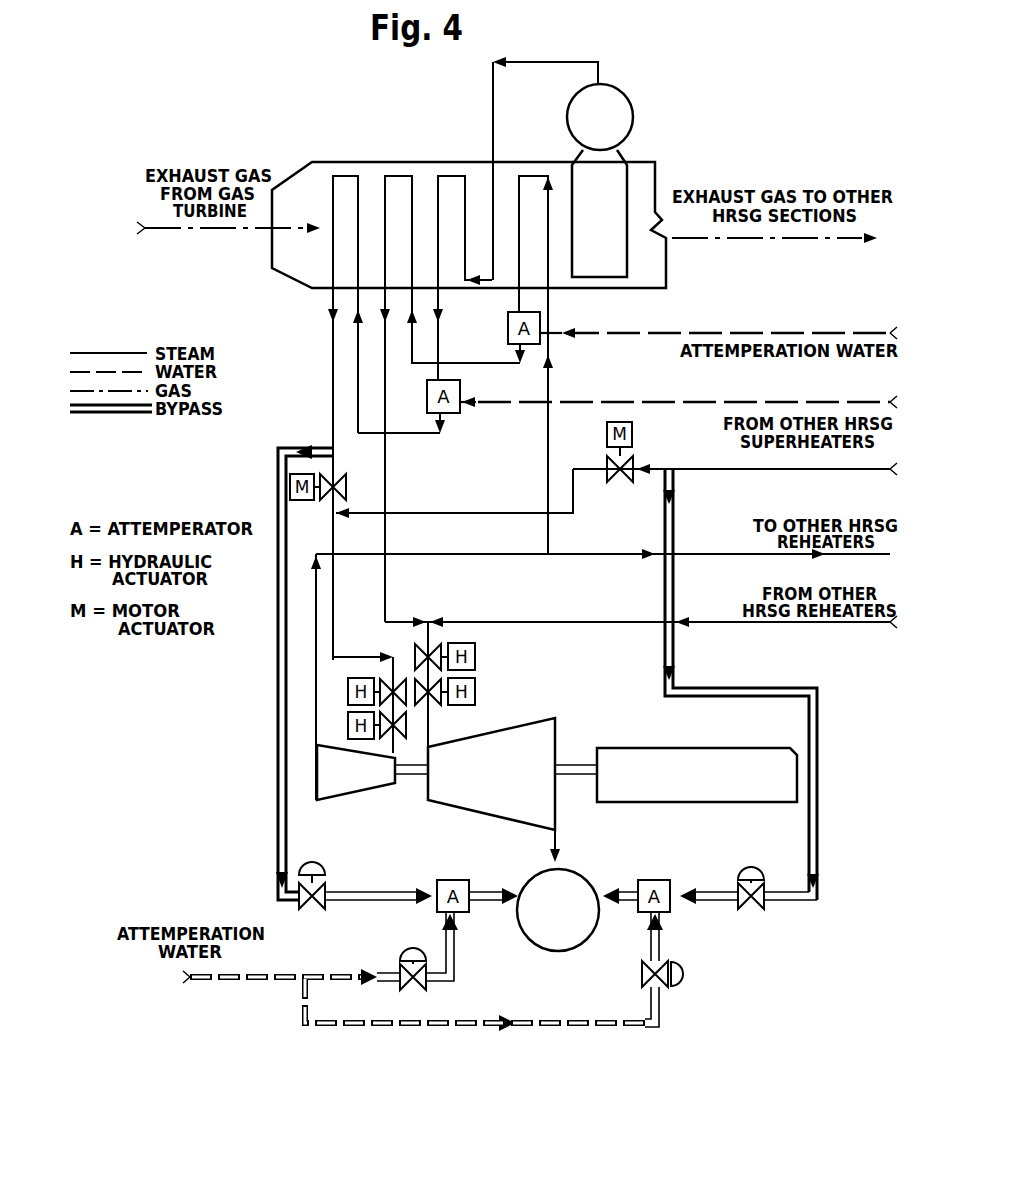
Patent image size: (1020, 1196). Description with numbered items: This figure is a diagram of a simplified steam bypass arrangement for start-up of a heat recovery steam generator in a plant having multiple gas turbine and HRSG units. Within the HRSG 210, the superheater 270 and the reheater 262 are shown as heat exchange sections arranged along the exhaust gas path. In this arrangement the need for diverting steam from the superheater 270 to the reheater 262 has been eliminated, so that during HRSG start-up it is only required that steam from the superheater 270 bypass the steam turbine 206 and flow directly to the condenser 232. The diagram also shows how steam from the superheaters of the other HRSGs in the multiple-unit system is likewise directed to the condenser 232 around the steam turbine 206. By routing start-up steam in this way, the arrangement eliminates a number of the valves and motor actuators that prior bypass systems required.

The HRSG 210 is at (294, 155).
The superheater 270 is at (341, 170).
The reheater 262 is at (397, 170).
The steam turbine 206 is at (390, 820).
The condenser 232 is at (579, 873).